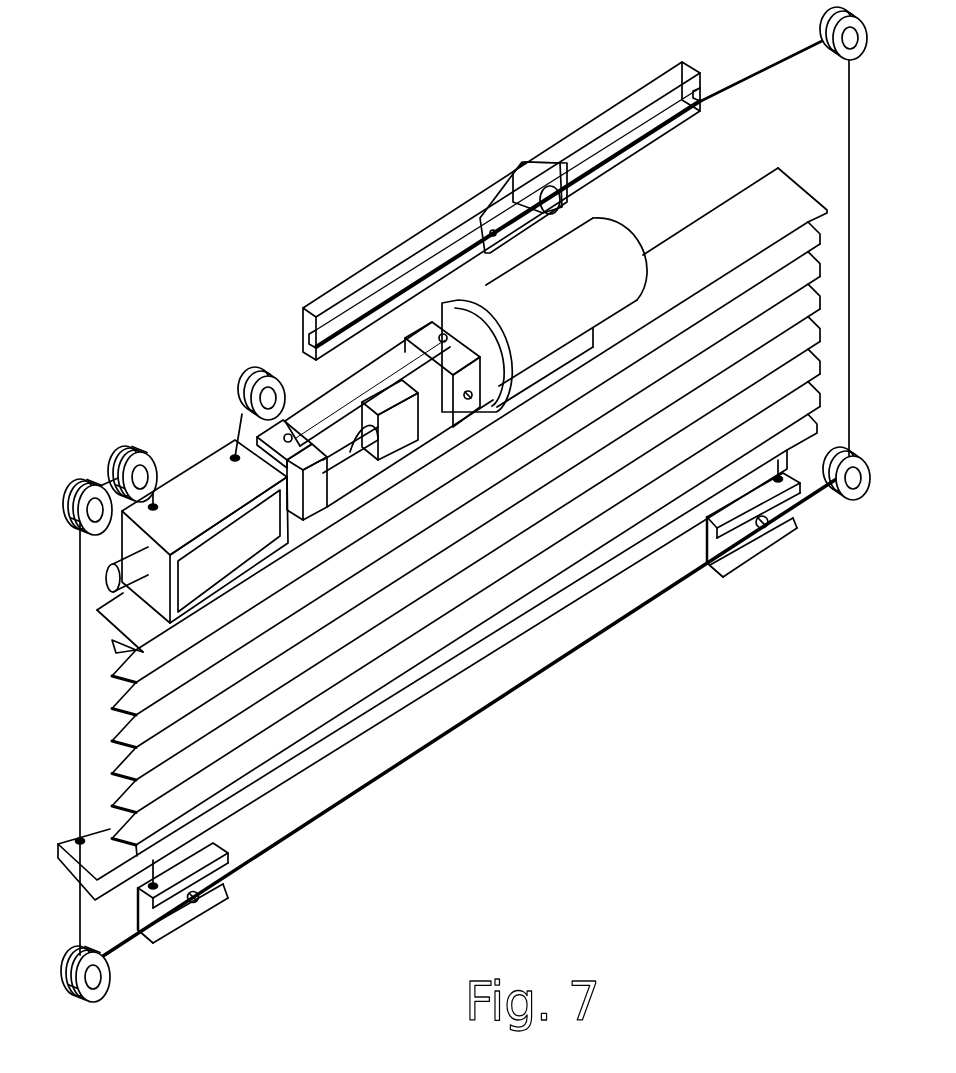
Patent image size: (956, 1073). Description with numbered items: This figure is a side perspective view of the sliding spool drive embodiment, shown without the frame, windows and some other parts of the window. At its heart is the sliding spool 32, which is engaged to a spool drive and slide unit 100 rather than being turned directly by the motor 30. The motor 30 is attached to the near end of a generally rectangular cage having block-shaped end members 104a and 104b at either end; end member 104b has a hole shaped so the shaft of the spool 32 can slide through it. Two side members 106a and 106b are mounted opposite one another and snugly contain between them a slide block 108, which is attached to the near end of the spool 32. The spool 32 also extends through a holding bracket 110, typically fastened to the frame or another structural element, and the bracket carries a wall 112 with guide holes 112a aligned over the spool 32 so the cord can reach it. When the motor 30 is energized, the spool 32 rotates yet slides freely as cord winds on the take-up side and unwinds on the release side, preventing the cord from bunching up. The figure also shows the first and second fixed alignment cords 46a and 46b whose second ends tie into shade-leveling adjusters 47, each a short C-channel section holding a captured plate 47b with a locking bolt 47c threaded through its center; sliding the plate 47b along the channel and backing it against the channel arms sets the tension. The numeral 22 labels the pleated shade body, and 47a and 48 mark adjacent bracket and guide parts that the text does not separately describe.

The pleated shade 22 is at (517, 551).
The motor 30 is at (570, 309).
The sliding spool 32 is at (107, 578).
The first fixed alignment cord 46a is at (140, 874).
The second fixed alignment cord 46b is at (784, 462).
The shade-leveling adjuster 47 is at (740, 563).
The bracket lower flange 47a is at (167, 941).
The plate 47b is at (190, 913).
The locking bolt 47c is at (214, 898).
The upper guide bracket 48 is at (533, 183).
The spool drive and slide unit 100 is at (374, 336).
The end member 104a is at (428, 322).
The end member 104b is at (256, 437).
The side member 106a is at (367, 384).
The side member 106b is at (345, 462).
The slide block 108 is at (414, 438).
The holding bracket 110 is at (99, 613).
The wall 112 is at (187, 480).
The guide holes 112a is at (238, 461).